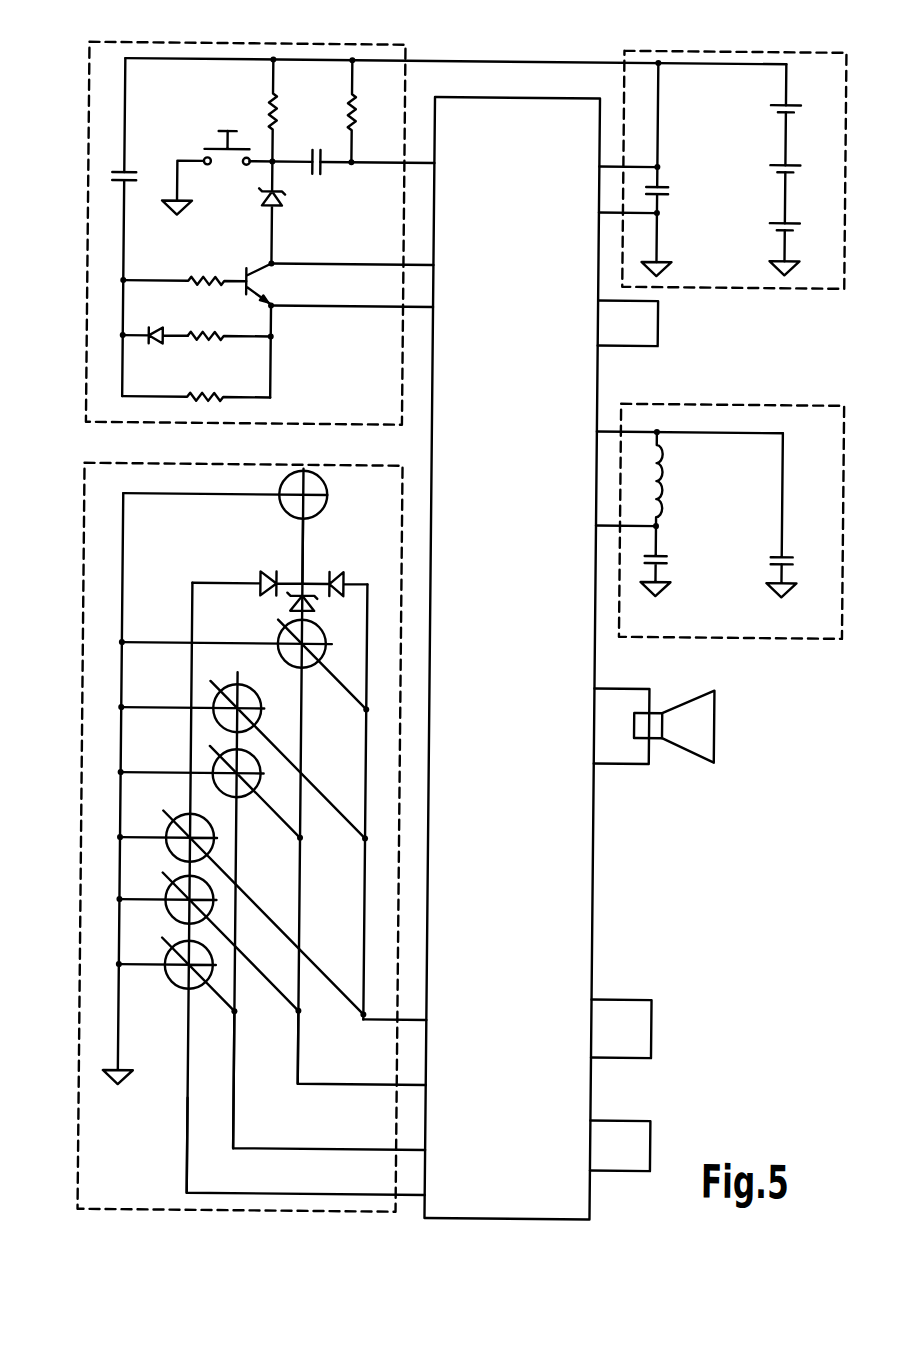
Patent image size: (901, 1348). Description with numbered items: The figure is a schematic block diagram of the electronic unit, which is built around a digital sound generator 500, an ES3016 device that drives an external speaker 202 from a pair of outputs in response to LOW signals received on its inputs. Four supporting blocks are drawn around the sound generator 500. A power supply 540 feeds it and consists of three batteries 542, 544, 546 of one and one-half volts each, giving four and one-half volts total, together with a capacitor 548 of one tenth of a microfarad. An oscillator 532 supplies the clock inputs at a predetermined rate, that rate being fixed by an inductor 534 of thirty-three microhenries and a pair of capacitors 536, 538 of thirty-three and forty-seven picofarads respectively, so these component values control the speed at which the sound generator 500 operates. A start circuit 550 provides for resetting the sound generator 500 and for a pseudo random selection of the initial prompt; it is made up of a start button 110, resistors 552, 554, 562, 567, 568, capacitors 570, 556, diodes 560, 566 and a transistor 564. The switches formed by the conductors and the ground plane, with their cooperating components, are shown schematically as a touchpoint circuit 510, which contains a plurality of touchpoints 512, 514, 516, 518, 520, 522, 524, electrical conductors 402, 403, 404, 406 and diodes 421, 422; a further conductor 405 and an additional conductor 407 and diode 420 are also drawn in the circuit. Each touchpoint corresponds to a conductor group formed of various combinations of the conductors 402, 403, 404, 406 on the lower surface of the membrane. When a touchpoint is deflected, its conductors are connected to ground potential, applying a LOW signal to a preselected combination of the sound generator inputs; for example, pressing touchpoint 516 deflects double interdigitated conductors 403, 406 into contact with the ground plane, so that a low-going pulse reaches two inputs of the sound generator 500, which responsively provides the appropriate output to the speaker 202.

The digital sound generator 500 is at (585, 1222).
The start circuit 550 is at (72, 141).
The power supply 540 is at (719, 48).
The oscillator 532 is at (848, 499).
The touchpoint circuit 510 is at (72, 710).
The speaker 202 is at (703, 757).
The start button 110 is at (226, 132).
The resistor 552 is at (268, 99).
The resistor 554 is at (347, 113).
The capacitor 556 is at (321, 174).
The diode 560 is at (279, 205).
The resistor 562 is at (210, 282).
The transistor 564 is at (254, 283).
The diode 566 is at (162, 325).
The resistor 567 is at (217, 334).
The resistor 568 is at (212, 394).
The capacitor 570 is at (129, 172).
The battery 542 is at (771, 106).
The battery 544 is at (771, 166).
The battery 546 is at (771, 224).
The capacitor 548 is at (667, 187).
The inductor 534 is at (669, 494).
The capacitor 536 is at (665, 552).
The capacitor 538 is at (793, 552).
The touchpoint 512 is at (330, 500).
The touchpoint 514 is at (324, 633).
The touchpoint 516 is at (262, 703).
The touchpoint 518 is at (260, 783).
The touchpoint 520 is at (166, 834).
The touchpoint 522 is at (166, 895).
The touchpoint 524 is at (166, 961).
The diode 420 is at (265, 575).
The diode 421 is at (296, 606).
The diode 422 is at (343, 580).
The conductor 405 is at (306, 545).
The electrical conductor 403 is at (372, 910).
The electrical conductor 402 is at (307, 1078).
The electrical conductor 406 is at (307, 1150).
The electrical conductor 404 is at (307, 1195).
The ground conductor 407 is at (127, 739).